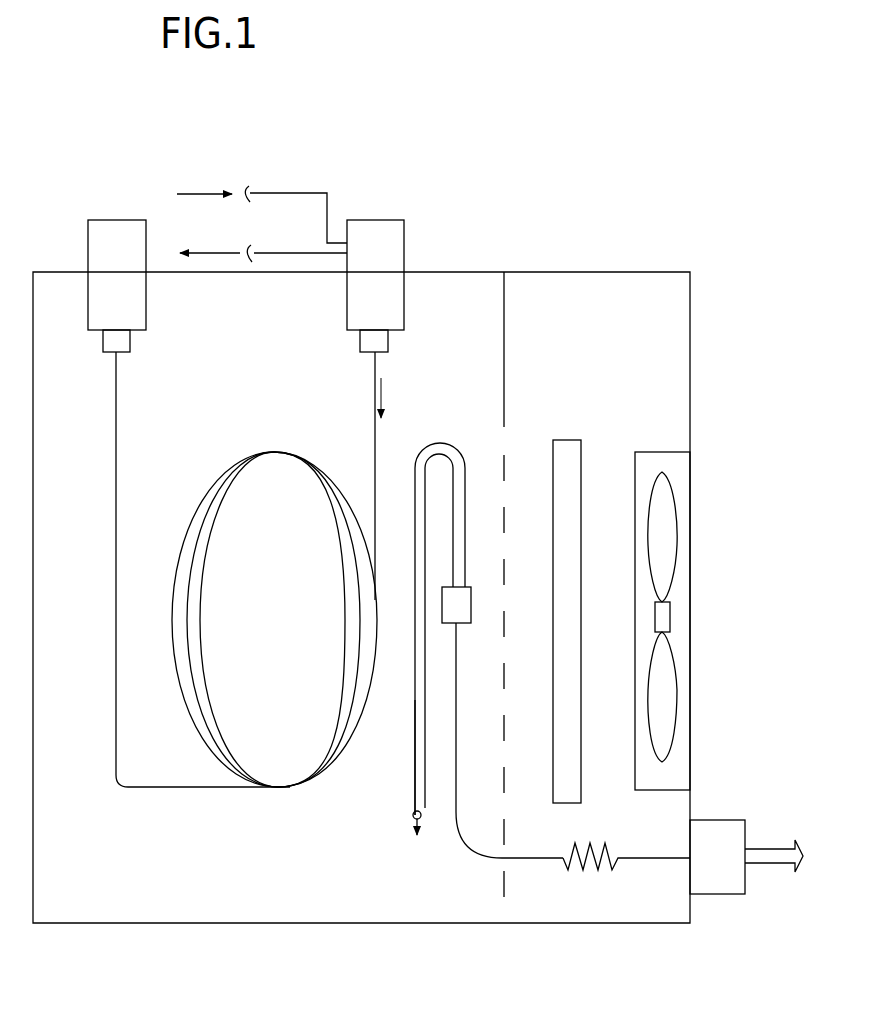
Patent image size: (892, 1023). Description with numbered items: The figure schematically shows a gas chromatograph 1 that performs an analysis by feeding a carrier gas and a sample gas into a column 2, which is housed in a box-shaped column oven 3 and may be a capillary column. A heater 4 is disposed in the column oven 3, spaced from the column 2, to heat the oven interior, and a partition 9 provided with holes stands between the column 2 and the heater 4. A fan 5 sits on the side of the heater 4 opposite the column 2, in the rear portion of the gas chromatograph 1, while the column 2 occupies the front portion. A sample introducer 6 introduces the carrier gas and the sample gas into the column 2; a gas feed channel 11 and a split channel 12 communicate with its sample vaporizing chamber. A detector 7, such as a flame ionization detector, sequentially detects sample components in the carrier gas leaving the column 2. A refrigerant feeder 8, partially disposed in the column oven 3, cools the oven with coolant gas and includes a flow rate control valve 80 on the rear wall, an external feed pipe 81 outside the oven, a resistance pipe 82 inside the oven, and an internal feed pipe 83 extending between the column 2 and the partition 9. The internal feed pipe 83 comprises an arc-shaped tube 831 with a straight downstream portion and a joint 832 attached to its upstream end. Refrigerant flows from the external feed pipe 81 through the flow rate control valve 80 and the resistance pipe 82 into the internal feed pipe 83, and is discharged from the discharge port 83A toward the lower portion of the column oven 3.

The gas chromatograph 1 is at (680, 214).
The column 2 is at (275, 452).
The column oven 3 is at (690, 378).
The heater 4 is at (563, 440).
The fan 5 is at (662, 452).
The sample introducer 6 is at (404, 228).
The detector 7 is at (117, 219).
The refrigerant feeder 8 is at (440, 405).
The partition 9 is at (504, 318).
The gas feed channel 11 is at (288, 193).
The split channel 12 is at (273, 253).
The flow rate control valve 80 is at (716, 820).
The external feed pipe 81 is at (778, 840).
The resistance pipe 82 is at (530, 860).
The internal feed pipe 83 is at (447, 446).
The tube 831 is at (412, 702).
The joint 832 is at (471, 606).
The discharge port 83A is at (413, 815).